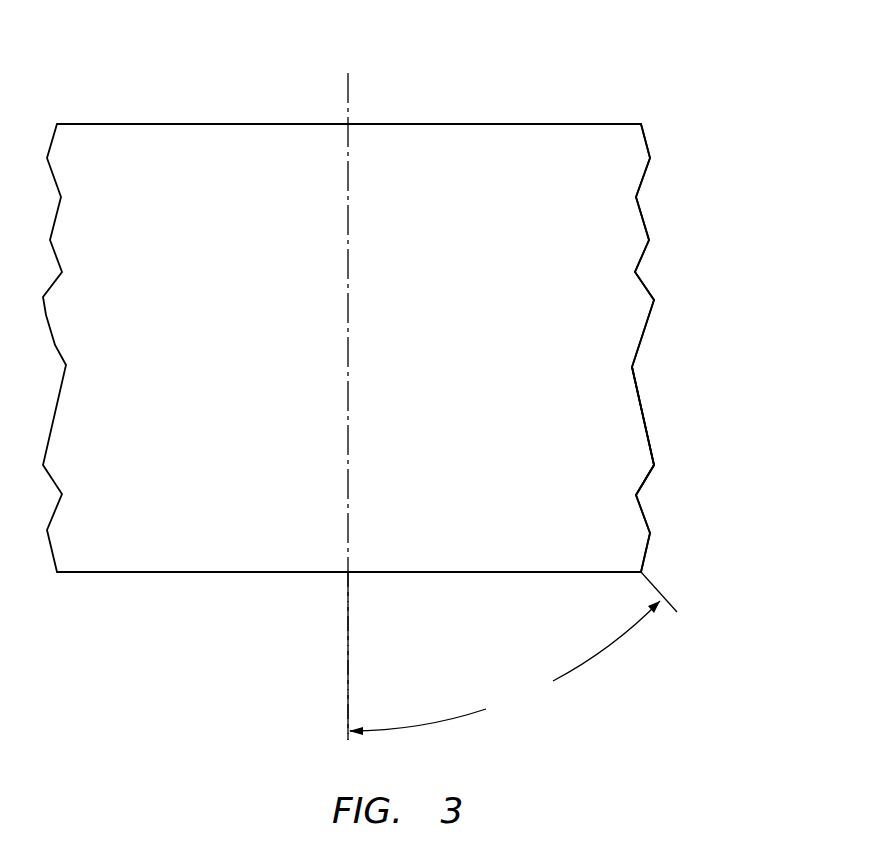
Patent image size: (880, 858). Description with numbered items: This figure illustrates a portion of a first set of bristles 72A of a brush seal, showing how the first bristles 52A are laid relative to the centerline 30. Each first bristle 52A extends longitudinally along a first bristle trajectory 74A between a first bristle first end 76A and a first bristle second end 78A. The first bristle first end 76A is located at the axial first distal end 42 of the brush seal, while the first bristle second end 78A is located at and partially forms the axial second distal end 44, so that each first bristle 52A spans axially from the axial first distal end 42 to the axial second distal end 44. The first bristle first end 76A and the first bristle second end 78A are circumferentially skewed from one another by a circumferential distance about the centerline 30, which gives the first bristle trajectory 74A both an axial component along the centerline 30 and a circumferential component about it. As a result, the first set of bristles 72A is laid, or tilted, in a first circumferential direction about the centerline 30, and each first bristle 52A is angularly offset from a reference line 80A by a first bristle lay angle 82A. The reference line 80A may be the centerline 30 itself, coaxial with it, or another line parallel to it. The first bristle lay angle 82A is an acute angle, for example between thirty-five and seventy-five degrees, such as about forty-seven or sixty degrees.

The centerline 30 is at (350, 80).
The axial first distal end 42 is at (102, 123).
The axial second distal end 44 is at (94, 573).
The first bristle 52A is at (637, 300).
The first set of bristles 72A is at (640, 70).
The first bristle trajectory 74A is at (560, 487).
The first bristle first end 76A is at (190, 123).
The first bristle second end 78A is at (570, 574).
The reference line 80A is at (348, 702).
The first bristle lay angle 82A is at (513, 653).